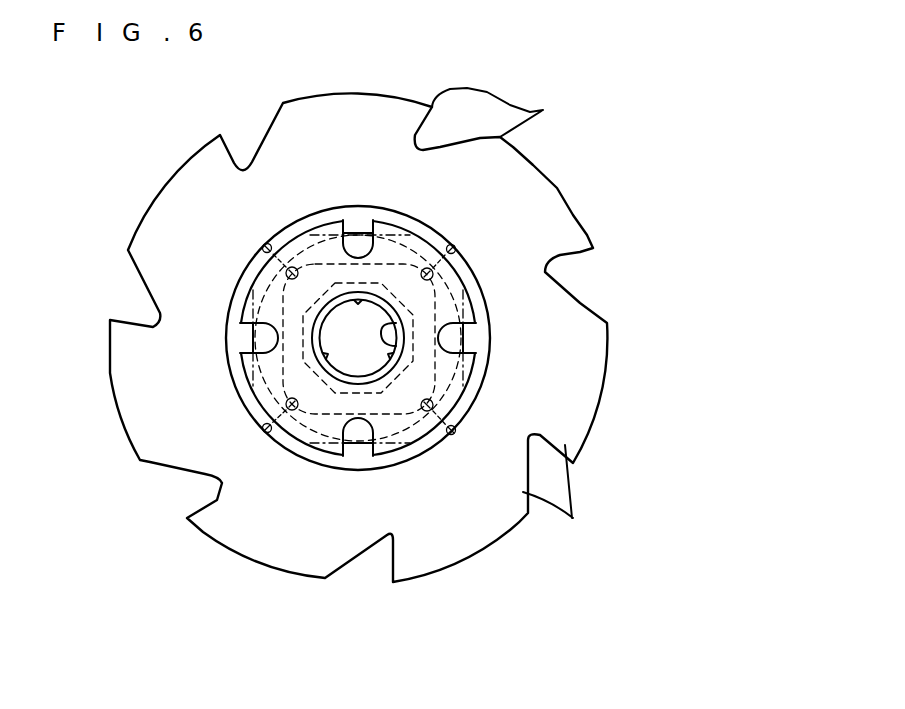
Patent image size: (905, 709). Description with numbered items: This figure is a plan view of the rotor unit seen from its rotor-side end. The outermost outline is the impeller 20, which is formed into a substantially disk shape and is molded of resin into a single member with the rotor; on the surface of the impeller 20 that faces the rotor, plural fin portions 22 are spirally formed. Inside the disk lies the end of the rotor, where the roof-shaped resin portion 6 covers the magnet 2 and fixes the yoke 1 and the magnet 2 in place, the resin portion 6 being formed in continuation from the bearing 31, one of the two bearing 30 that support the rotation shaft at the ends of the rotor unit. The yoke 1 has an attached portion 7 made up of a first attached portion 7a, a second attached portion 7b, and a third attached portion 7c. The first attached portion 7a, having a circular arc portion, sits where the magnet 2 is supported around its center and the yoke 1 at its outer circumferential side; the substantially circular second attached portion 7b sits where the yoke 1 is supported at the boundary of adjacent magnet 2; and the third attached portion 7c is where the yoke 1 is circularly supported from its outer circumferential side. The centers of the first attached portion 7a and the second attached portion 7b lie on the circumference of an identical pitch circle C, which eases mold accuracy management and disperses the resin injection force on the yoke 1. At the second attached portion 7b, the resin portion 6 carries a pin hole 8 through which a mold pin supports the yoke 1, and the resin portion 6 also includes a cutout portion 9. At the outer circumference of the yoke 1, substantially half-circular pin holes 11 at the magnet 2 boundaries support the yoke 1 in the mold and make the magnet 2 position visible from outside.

The impeller 20 is at (583, 190).
The fin portions 22 is at (182, 185).
The resin portion 6 is at (315, 463).
The magnet 2 is at (403, 221).
The yoke 1 is at (300, 318).
The pitch circle C is at (316, 236).
The bearing 30 is at (451, 338).
The bearing 31 is at (384, 324).
The attached portion 7 is at (396, 325).
The first attached portion 7a is at (369, 458).
The second attached portion 7b is at (455, 263).
The third attached portion 7c is at (317, 226).
The cutout portion 9 is at (358, 229).
The pin holes 11 is at (265, 243).
The pin hole 8 is at (288, 269).